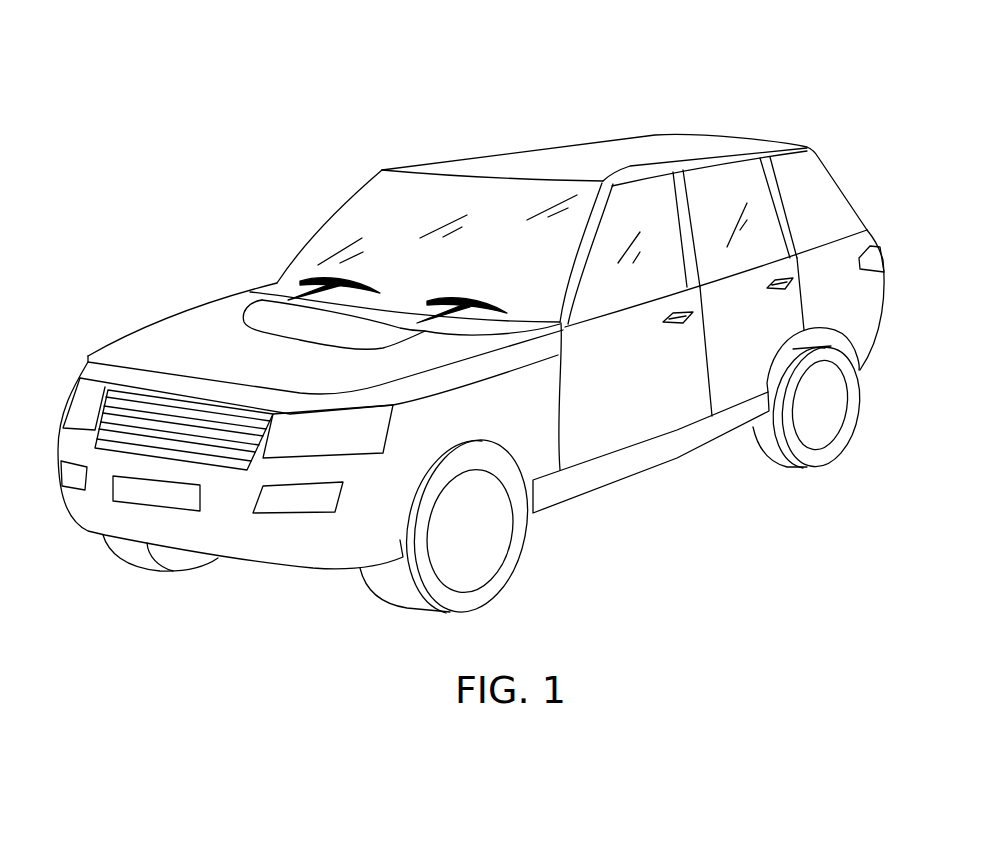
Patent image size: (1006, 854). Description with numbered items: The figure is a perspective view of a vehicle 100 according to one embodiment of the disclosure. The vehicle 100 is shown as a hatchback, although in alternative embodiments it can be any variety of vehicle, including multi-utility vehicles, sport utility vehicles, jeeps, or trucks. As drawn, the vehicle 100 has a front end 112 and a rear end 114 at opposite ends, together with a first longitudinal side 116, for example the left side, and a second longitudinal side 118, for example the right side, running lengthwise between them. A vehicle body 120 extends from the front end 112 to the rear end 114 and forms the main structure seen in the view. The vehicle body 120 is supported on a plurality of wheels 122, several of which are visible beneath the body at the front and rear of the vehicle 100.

The vehicle 100 is at (743, 69).
The front end 112 is at (247, 520).
The rear end 114 is at (885, 250).
The first longitudinal side 116 is at (822, 274).
The second longitudinal side 118 is at (157, 320).
The vehicle body 120 is at (617, 413).
The wheels 122 is at (847, 433).